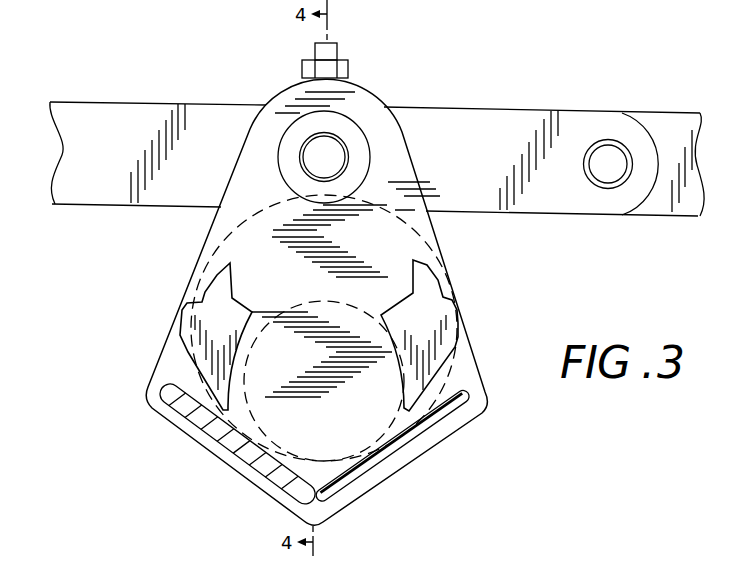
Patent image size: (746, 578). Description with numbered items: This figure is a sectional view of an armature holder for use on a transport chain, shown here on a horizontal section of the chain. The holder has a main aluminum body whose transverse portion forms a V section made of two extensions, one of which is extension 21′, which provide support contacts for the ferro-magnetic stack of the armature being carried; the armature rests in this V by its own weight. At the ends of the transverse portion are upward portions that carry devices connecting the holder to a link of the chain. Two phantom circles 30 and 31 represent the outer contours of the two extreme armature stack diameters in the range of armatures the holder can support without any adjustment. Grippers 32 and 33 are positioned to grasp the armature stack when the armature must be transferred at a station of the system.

The circle 30 is at (349, 300).
The circle 31 is at (440, 241).
The gripper 32 is at (190, 328).
The gripper 33 is at (455, 350).
The extension 21′ is at (418, 433).